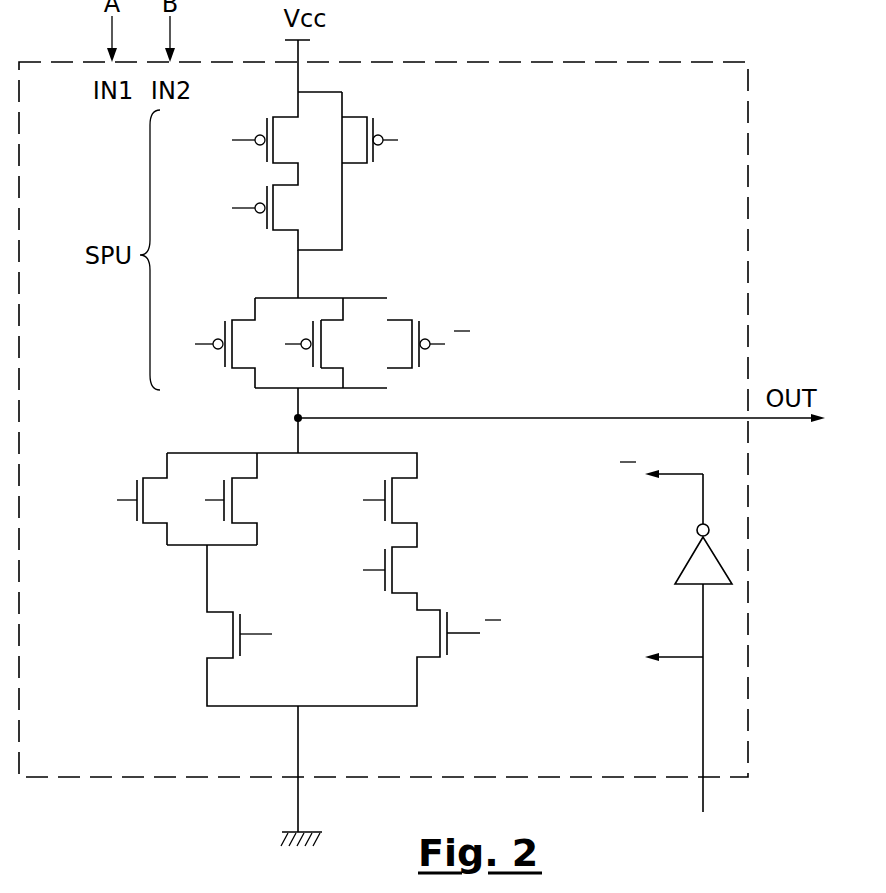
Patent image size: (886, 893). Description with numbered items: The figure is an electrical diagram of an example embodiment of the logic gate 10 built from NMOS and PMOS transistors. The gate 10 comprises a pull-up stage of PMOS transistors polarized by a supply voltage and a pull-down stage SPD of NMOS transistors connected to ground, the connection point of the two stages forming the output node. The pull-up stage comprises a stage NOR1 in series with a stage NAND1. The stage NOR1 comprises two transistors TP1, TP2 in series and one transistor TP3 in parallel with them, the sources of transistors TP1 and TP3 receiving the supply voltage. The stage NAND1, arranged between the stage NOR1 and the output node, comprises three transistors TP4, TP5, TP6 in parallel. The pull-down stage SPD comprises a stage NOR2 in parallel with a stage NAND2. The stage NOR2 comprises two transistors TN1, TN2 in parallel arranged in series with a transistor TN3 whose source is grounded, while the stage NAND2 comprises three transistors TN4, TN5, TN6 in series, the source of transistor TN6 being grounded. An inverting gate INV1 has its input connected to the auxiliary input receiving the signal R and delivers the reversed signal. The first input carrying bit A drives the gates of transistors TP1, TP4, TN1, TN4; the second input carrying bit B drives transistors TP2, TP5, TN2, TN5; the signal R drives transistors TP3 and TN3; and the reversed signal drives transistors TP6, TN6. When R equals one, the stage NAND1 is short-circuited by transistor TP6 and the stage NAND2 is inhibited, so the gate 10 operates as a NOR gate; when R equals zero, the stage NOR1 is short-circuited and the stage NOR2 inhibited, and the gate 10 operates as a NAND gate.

The logic gate 10 is at (607, 60).
The transistor TP1 is at (273, 137).
The transistor TP2 is at (273, 218).
The transistor TP3 is at (367, 137).
The transistor TP4 is at (237, 350).
The transistor TP5 is at (320, 345).
The transistor TP6 is at (404, 350).
The transistor TN1 is at (150, 510).
The transistor TN2 is at (234, 499).
The transistor TN3 is at (231, 633).
The transistor TN4 is at (393, 495).
The transistor TN5 is at (393, 565).
The transistor TN6 is at (423, 633).
The stage NOR1 is at (395, 175).
The stage NAND1 is at (391, 341).
The stage NOR2 is at (193, 610).
The stage NAND2 is at (409, 610).
The pull-down stage SPD is at (326, 609).
The inverting gate INV1 is at (718, 552).